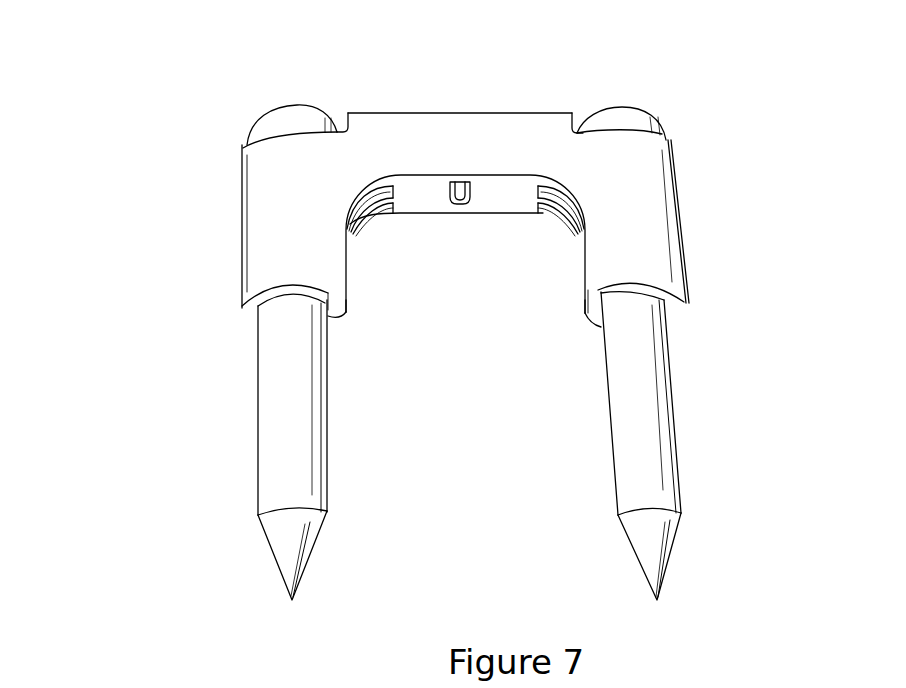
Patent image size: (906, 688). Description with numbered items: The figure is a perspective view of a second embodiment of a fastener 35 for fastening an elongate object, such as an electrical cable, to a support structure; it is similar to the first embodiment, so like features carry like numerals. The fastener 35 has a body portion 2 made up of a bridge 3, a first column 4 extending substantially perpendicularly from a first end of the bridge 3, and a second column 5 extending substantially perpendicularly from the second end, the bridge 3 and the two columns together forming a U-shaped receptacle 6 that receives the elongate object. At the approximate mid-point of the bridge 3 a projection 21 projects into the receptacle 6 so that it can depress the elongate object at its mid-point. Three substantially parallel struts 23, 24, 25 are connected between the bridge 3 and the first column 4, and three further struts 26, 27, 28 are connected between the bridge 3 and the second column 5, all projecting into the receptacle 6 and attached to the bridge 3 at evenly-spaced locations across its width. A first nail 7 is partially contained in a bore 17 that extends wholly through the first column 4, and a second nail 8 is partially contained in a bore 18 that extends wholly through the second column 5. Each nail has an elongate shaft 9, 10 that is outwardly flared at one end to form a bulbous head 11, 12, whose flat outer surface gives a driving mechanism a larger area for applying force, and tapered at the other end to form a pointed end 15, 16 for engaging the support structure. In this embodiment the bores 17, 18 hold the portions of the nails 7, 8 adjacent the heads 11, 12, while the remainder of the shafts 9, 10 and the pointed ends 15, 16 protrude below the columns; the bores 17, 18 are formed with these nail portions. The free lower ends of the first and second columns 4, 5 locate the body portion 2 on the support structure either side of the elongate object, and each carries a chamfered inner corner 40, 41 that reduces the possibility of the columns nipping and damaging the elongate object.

The fastener 35 is at (132, 76).
The body portion 2 is at (523, 103).
The bridge 3 is at (405, 130).
The bulbous head 11 is at (278, 116).
The bulbous head 12 is at (637, 120).
The first column 4 is at (258, 222).
The second column 5 is at (658, 227).
The projection 21 is at (462, 194).
The strut 23 is at (366, 224).
The strut 24 is at (380, 222).
The strut 25 is at (407, 220).
The strut 26 is at (572, 242).
The strut 27 is at (561, 236).
The strut 28 is at (545, 195).
The bore 17 is at (250, 318).
The bore 18 is at (683, 308).
The chamfered inner corner 40 is at (344, 312).
The chamfered inner corner 41 is at (587, 322).
The first nail 7 is at (232, 462).
The elongate shaft 9 is at (303, 440).
The pointed end 15 is at (285, 533).
The second nail 8 is at (700, 428).
The elongate shaft 10 is at (625, 434).
The pointed end 16 is at (652, 537).
The U-shaped receptacle 6 is at (463, 415).